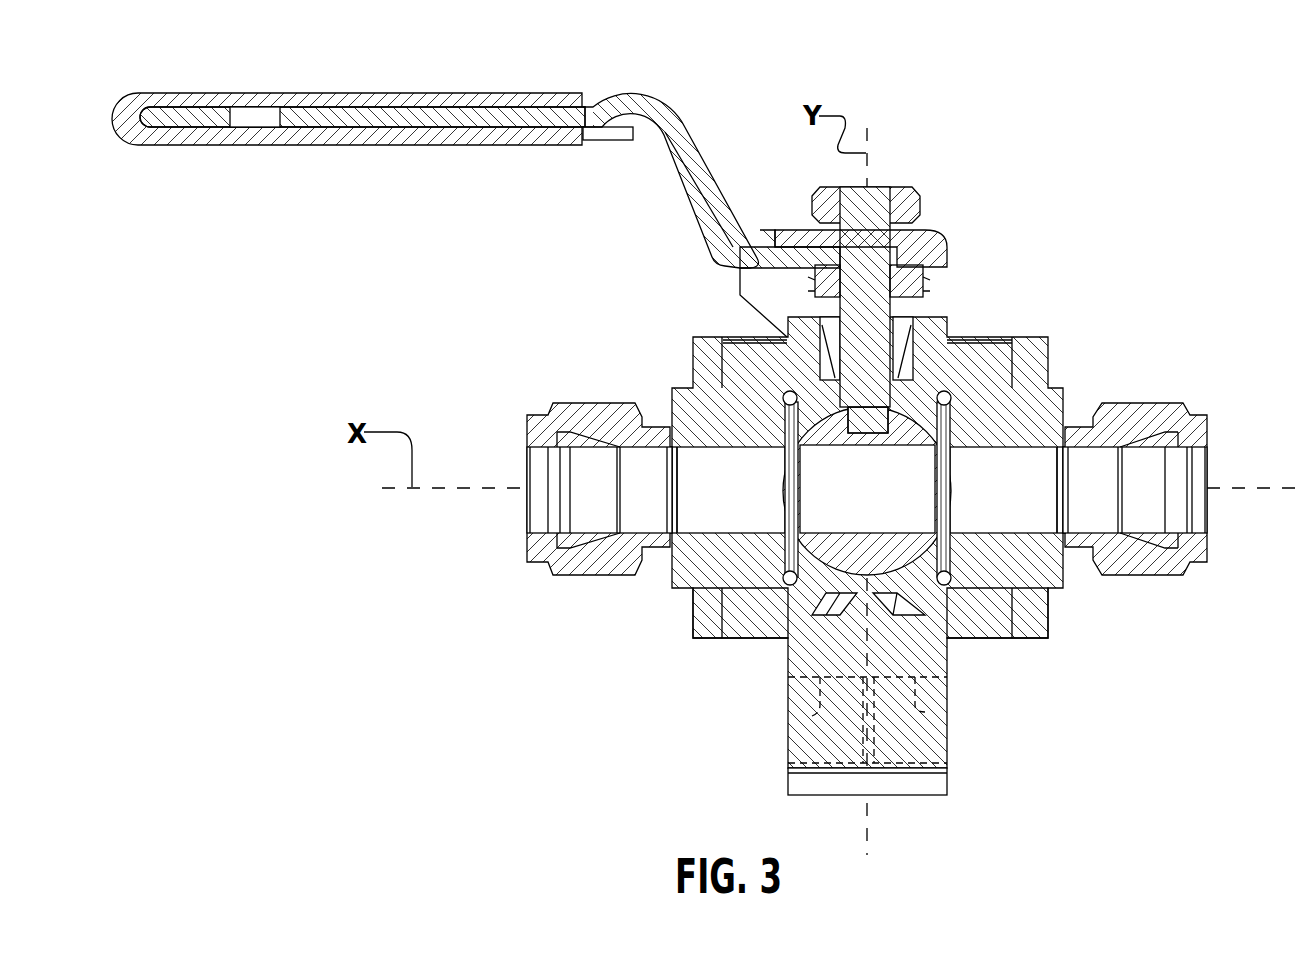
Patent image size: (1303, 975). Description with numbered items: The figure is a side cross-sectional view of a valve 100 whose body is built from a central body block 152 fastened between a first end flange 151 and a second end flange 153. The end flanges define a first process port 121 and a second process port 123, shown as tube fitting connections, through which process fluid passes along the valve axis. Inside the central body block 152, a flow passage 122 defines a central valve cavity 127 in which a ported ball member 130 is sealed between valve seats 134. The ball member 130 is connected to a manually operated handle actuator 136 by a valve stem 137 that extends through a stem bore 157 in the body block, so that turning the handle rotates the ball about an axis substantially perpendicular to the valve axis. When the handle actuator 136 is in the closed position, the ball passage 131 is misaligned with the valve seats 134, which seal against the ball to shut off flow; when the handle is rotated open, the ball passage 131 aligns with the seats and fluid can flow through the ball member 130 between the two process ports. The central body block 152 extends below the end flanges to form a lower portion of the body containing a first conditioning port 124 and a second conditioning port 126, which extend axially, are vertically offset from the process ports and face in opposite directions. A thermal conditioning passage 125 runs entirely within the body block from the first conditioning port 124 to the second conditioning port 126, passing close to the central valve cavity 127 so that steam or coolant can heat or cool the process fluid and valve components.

The valve 100 is at (936, 90).
The first process port 121 is at (643, 447).
The flow passage 122 is at (780, 473).
The second process port 123 is at (1103, 446).
The first conditioning port 124 is at (820, 713).
The thermal conditioning passage 125 is at (820, 607).
The second conditioning port 126 is at (925, 712).
The central valve cavity 127 is at (953, 467).
The ball member 130 is at (830, 427).
The ball passage 131 is at (805, 490).
The valve seats 134 is at (782, 583).
The handle actuator 136 is at (532, 120).
The valve stem 137 is at (870, 282).
The first end flange 151 is at (743, 627).
The central body block 152 is at (893, 790).
The second end flange 153 is at (987, 627).
The stem bore 157 is at (895, 378).